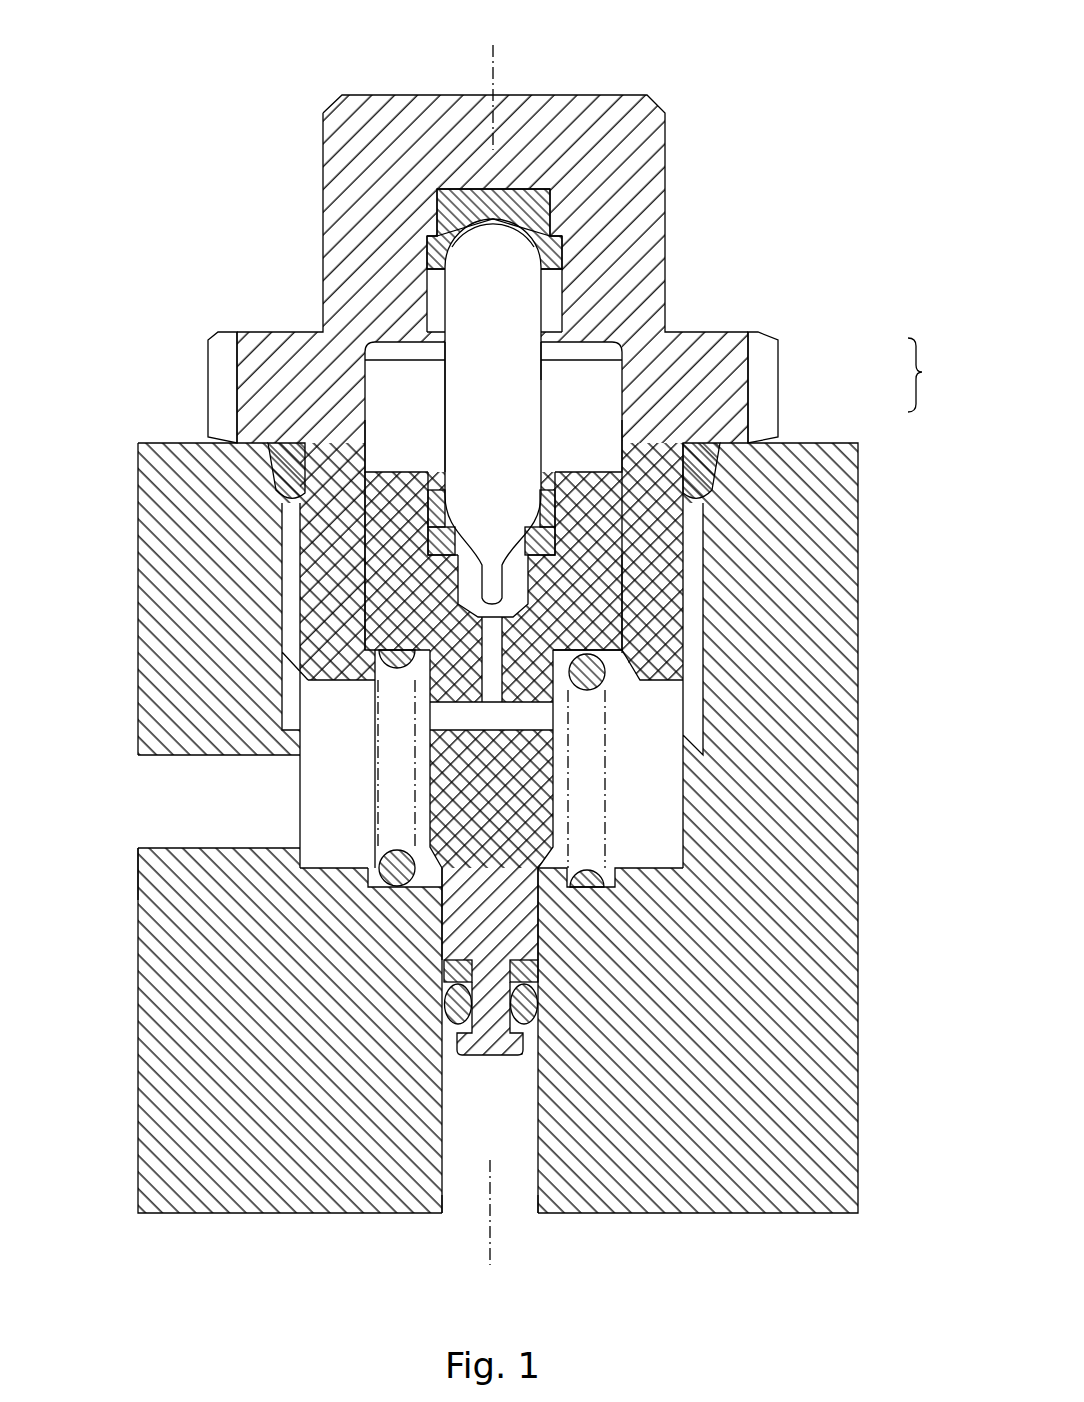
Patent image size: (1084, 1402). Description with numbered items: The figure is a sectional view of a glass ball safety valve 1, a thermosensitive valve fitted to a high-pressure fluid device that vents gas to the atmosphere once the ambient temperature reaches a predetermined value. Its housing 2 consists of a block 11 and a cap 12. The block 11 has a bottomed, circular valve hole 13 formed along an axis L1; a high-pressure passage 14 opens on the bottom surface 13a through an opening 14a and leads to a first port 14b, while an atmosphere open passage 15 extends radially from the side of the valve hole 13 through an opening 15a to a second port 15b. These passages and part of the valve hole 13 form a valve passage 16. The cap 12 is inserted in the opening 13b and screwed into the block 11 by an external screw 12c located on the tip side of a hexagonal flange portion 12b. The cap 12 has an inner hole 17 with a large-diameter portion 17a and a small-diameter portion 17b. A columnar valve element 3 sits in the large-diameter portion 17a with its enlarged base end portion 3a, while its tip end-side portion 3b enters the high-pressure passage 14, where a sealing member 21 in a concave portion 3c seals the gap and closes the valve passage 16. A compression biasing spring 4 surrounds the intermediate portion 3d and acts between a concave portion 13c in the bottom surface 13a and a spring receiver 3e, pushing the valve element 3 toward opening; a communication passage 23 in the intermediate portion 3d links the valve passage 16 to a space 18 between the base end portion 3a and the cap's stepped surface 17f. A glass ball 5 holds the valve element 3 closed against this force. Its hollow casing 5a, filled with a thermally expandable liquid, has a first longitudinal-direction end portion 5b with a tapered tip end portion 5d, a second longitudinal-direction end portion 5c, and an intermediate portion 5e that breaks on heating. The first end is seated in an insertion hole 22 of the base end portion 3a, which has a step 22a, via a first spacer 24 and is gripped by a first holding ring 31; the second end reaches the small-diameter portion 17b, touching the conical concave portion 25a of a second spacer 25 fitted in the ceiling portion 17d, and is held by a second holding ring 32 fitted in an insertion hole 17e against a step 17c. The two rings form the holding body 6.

The safety valve 1 is at (763, 100).
The housing 2 is at (922, 375).
The valve element 3 is at (625, 445).
The base end portion 3a is at (607, 580).
The tip end-side portion 3b is at (523, 927).
The concave portion 3c is at (530, 1037).
The intermediate portion 3d is at (540, 793).
The spring receiver 3e is at (610, 655).
The biasing spring 4 is at (585, 763).
The glass ball 5 is at (622, 363).
The casing 5a is at (528, 370).
The first longitudinal-direction end portion 5b is at (433, 570).
The second longitudinal-direction end portion 5c is at (551, 218).
The tip end portion 5d is at (460, 587).
The intermediate portion 5e is at (447, 390).
The holding body 6 is at (494, 372).
The block 11 is at (838, 467).
The cap 12 is at (737, 422).
The flange portion 12b is at (738, 343).
The external screw 12c is at (687, 613).
The valve hole 13 is at (352, 732).
The bottom surface 13a is at (333, 858).
The opening 13b is at (697, 487).
The concave portion 13c is at (633, 897).
The high-pressure passage 14 is at (502, 1132).
The opening 14a is at (440, 900).
The first port 14b is at (460, 1210).
The atmosphere open passage 15 is at (230, 817).
The opening 15a is at (300, 838).
The second port 15b is at (143, 813).
The valve passage 16 is at (327, 767).
The inner hole 17 is at (373, 435).
The large-diameter portion 17a is at (373, 542).
The small-diameter portion 17b is at (437, 300).
The step 17c is at (420, 253).
The ceiling portion 17d is at (500, 192).
The insertion hole 17e is at (438, 317).
The stepped surface 17f is at (362, 346).
The space 18 is at (417, 449).
The sealing member 21 is at (527, 1002).
The insertion hole 22 is at (545, 468).
The step 22a is at (560, 560).
The communication passage 23 is at (493, 717).
The first spacer 24 is at (557, 540).
The second spacer 25 is at (463, 196).
The concave portion 25a is at (518, 243).
The first holding ring 31 is at (555, 505).
The second holding ring 32 is at (563, 257).
The axis L1 is at (490, 1232).